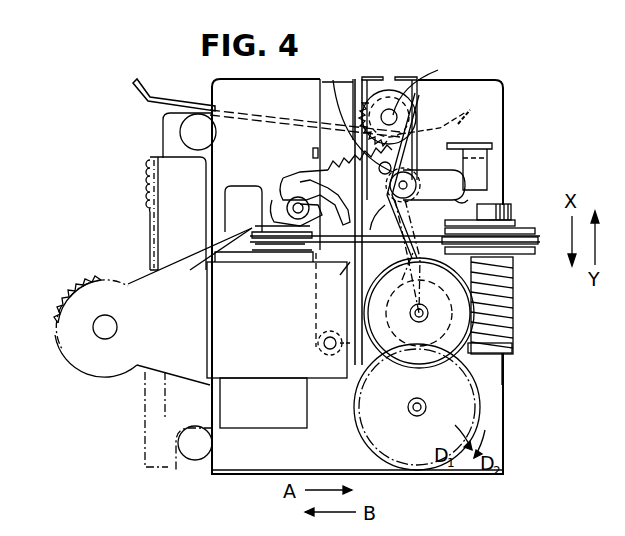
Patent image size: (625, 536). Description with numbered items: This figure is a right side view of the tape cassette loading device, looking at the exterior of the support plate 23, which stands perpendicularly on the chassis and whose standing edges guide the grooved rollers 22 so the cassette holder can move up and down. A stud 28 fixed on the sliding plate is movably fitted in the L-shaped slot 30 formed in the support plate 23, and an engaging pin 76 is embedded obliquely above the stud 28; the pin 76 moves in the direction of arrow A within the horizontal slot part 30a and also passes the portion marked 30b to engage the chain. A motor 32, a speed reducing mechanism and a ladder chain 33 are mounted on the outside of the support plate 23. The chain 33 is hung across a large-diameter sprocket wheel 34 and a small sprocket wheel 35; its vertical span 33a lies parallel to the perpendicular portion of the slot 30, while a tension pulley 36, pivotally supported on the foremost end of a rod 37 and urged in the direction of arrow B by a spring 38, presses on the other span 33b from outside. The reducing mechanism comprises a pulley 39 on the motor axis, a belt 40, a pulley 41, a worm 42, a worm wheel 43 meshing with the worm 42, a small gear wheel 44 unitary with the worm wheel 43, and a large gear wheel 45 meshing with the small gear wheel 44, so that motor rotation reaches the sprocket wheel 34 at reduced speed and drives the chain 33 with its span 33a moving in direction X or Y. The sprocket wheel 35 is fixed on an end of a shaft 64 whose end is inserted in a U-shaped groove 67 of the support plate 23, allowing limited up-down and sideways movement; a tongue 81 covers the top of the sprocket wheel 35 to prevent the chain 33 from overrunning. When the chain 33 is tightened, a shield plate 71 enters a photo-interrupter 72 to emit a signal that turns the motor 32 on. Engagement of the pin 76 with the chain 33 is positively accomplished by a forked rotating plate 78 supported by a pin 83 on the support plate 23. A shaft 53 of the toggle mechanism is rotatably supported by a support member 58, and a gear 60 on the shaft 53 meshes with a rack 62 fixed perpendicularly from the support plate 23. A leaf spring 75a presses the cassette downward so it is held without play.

The grooved rollers 22 is at (178, 134).
The support plate 23 is at (503, 98).
The stud 28 is at (273, 193).
The L-shaped slot 30 is at (298, 262).
The horizontal slot part 30a is at (270, 205).
The block recess 30b is at (332, 254).
The motor 32 is at (262, 372).
The ladder chain 33 is at (352, 382).
The vertical span 33a is at (358, 288).
The other span 33b is at (382, 219).
The large-diameter sprocket wheel 34 is at (430, 458).
The small sprocket wheel 35 is at (398, 117).
The tension pulley 36 is at (406, 176).
The rod 37 is at (404, 214).
The spring 38 is at (314, 124).
The pulley 39 is at (206, 249).
The belt 40 is at (528, 240).
The pulley 41 is at (516, 230).
The worm 42 is at (514, 323).
The worm wheel 43 is at (490, 372).
The small gear wheel 44 is at (419, 325).
The large gear wheel 45 is at (470, 412).
The shaft 53 is at (90, 334).
The support member 58 is at (148, 372).
The gear 60 is at (100, 308).
The rack 62 is at (158, 218).
The shaft 64 is at (428, 80).
The U-shaped groove 67 is at (356, 90).
The shield plate 71 is at (462, 198).
The photo-interrupter 72 is at (478, 168).
The leaf spring 75a is at (449, 110).
The engaging pin 76 is at (284, 192).
The forked rotating plate 78 is at (312, 180).
The tongue 81 is at (406, 76).
The pin 83 is at (333, 164).